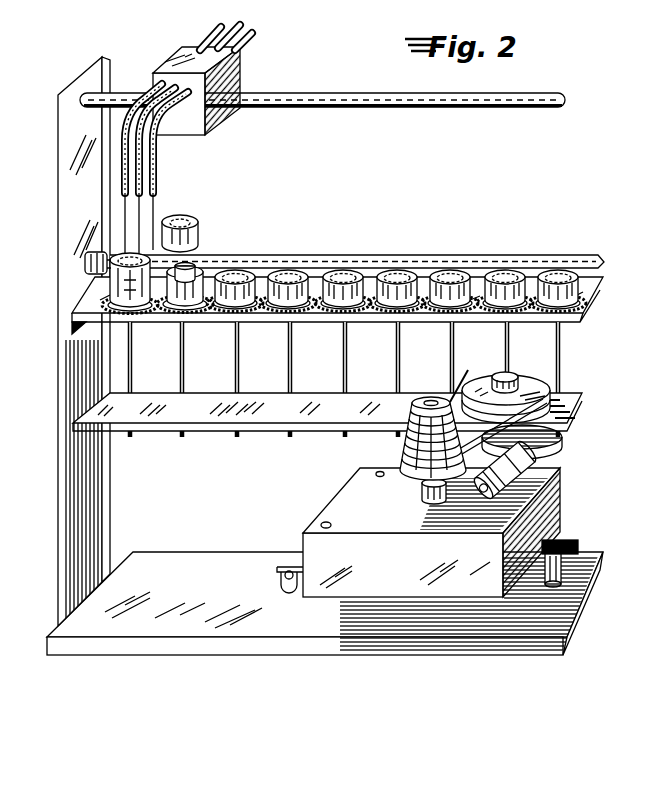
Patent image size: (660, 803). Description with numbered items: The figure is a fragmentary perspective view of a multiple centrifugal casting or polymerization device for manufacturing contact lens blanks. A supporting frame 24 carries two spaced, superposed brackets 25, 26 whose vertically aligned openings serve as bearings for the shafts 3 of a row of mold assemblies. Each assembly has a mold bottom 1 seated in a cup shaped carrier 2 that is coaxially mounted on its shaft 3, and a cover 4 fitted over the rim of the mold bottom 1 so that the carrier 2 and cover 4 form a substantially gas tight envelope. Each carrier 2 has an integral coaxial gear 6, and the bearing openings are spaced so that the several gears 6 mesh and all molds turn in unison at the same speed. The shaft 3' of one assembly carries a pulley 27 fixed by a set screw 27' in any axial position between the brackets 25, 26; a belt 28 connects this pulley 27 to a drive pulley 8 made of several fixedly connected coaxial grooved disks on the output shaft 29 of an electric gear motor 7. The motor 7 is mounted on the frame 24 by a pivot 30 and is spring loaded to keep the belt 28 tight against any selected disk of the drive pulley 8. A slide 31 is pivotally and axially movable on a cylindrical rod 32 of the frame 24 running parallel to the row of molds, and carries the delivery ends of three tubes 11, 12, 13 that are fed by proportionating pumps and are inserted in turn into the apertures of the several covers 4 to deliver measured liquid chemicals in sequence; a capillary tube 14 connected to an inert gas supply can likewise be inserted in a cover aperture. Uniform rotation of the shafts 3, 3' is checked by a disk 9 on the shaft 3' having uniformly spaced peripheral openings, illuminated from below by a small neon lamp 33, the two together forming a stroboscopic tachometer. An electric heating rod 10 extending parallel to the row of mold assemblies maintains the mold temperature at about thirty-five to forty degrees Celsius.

The mold bottom 1 is at (197, 268).
The cup shaped carrier 2 is at (283, 274).
The shaft 3 is at (344, 367).
The shaft of one mold assembly 3' is at (522, 347).
The cover 4 is at (107, 277).
The gear 6 is at (283, 312).
The electric gear motor 7 is at (548, 505).
The drive pulley 8 is at (410, 446).
The disk 9 is at (543, 441).
The electric heating rod 10 is at (345, 255).
The tube 11 is at (219, 26).
The tube 12 is at (245, 24).
The tube 13 is at (254, 35).
The capillary tube 14 is at (123, 212).
The supporting frame 24 is at (108, 492).
The bracket 25 is at (320, 319).
The bracket 26 is at (273, 421).
The pulley 27 is at (530, 393).
The set screw 27' is at (526, 368).
The belt 28 is at (457, 397).
The output shaft 29 is at (421, 485).
The pivot 30 is at (578, 546).
The slide 31 is at (208, 128).
The cylindrical rod 32 is at (346, 94).
The neon lamp 33 is at (549, 470).